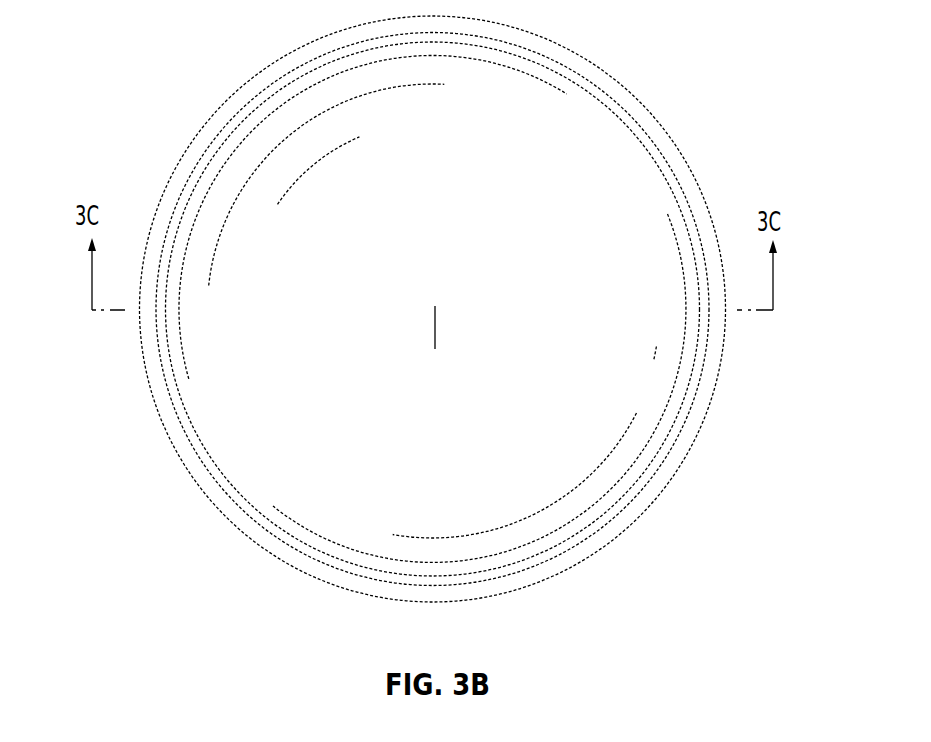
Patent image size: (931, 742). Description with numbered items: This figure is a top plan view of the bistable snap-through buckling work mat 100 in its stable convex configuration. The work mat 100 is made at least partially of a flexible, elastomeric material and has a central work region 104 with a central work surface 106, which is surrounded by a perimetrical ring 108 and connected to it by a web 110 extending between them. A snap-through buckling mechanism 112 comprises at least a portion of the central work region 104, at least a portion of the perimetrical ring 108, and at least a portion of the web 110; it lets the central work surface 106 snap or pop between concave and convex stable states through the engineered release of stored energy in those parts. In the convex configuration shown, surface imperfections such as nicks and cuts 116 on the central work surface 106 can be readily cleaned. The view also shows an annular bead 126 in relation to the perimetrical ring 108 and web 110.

The bistable snap-through buckling work mat 100 is at (703, 78).
The central work region 104 is at (285, 150).
The central work surface 106 is at (567, 458).
The perimetrical ring 108 is at (168, 432).
The web 110 is at (283, 542).
The snap-through buckling mechanism 112 is at (138, 372).
The nicks and cuts 116 is at (432, 319).
The annular bead 126 is at (187, 475).